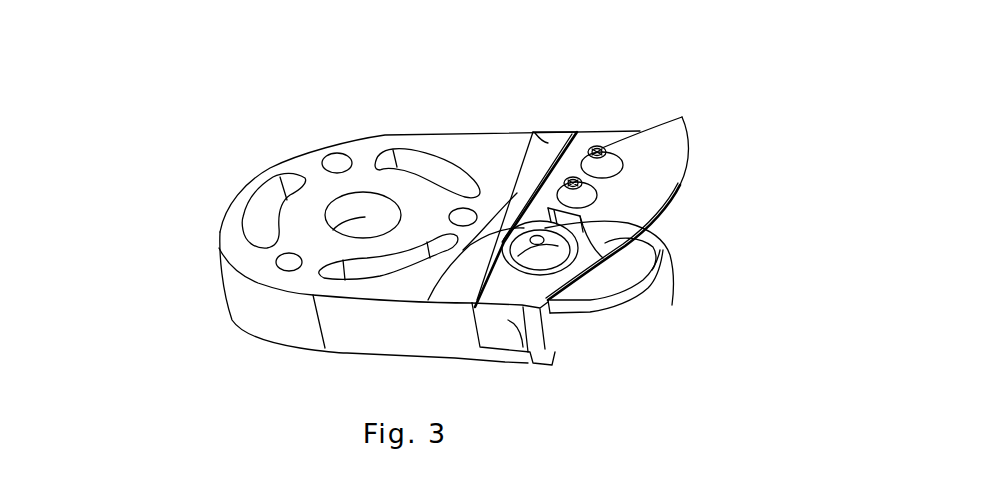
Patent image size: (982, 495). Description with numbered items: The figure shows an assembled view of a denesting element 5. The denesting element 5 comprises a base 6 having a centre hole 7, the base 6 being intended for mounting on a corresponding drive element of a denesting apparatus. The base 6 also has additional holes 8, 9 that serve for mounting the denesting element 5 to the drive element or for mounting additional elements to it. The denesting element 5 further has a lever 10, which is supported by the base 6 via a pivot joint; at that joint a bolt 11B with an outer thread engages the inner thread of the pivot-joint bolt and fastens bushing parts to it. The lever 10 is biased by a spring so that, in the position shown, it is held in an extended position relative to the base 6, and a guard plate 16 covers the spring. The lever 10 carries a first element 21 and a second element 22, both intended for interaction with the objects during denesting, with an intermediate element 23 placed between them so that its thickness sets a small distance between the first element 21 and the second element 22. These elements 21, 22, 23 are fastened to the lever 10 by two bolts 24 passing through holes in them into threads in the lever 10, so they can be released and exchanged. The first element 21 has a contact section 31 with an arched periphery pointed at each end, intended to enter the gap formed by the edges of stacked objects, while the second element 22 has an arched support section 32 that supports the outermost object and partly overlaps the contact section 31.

The denesting element 5 is at (234, 136).
The base 6 is at (237, 193).
The centre hole 7 is at (367, 217).
The hole 8 is at (292, 252).
The hole 9 is at (260, 212).
The lever 10 is at (533, 363).
The bolt 11B is at (556, 245).
The guard plate 16 is at (533, 132).
The first element 21 is at (550, 204).
The second element 22 is at (463, 250).
The intermediate element 23 is at (651, 221).
The bolt 24 is at (571, 178).
The contact section 31 is at (680, 137).
The support section 32 is at (612, 272).